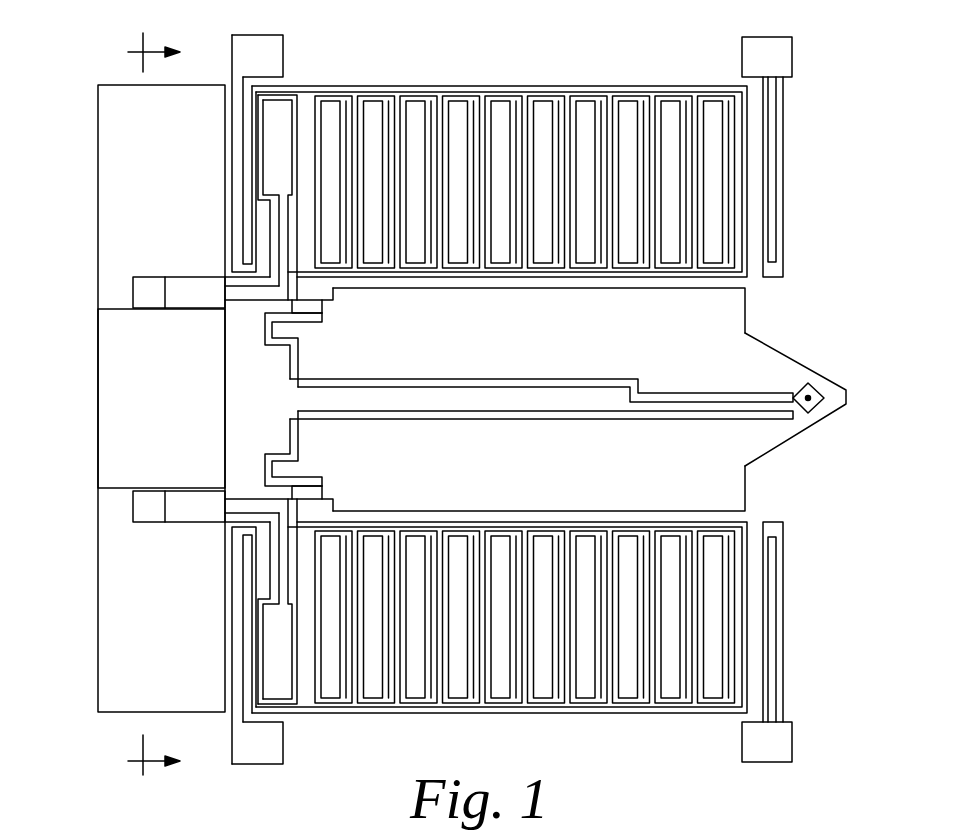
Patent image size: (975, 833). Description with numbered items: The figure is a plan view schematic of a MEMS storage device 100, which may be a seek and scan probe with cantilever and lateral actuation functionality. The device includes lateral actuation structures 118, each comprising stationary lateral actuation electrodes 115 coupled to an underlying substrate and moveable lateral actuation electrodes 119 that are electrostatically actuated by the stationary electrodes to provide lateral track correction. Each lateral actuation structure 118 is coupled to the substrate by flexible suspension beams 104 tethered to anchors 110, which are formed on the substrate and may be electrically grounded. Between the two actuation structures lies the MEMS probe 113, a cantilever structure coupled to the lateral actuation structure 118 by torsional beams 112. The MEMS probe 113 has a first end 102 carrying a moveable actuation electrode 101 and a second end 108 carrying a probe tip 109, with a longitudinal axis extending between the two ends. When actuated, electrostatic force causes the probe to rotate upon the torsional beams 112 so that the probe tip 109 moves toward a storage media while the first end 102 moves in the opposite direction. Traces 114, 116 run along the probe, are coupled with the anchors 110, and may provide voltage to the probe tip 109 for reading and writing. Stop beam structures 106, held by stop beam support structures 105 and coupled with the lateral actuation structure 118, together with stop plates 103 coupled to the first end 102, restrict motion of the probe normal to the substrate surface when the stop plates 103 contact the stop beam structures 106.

The MEMS storage device 100 is at (563, 54).
The moveable actuation electrode 101 is at (184, 399).
The first end 102 is at (110, 396).
The stop plate 103 is at (143, 288).
The suspension beam 104 is at (240, 133).
The stop beam support structure 105 is at (275, 232).
The stop beam structure 106 is at (197, 293).
The second end 108 is at (792, 380).
The probe tip 109 is at (822, 396).
The anchor 110 is at (272, 52).
The torsional beam 112 is at (302, 307).
The MEMS probe 113 is at (521, 365).
The trace 114 is at (678, 400).
The lateral actuation electrode 115 is at (415, 105).
The trace 116 is at (680, 418).
The lateral actuation structure 118 is at (528, 198).
The moveable lateral actuation electrode 119 is at (528, 103).